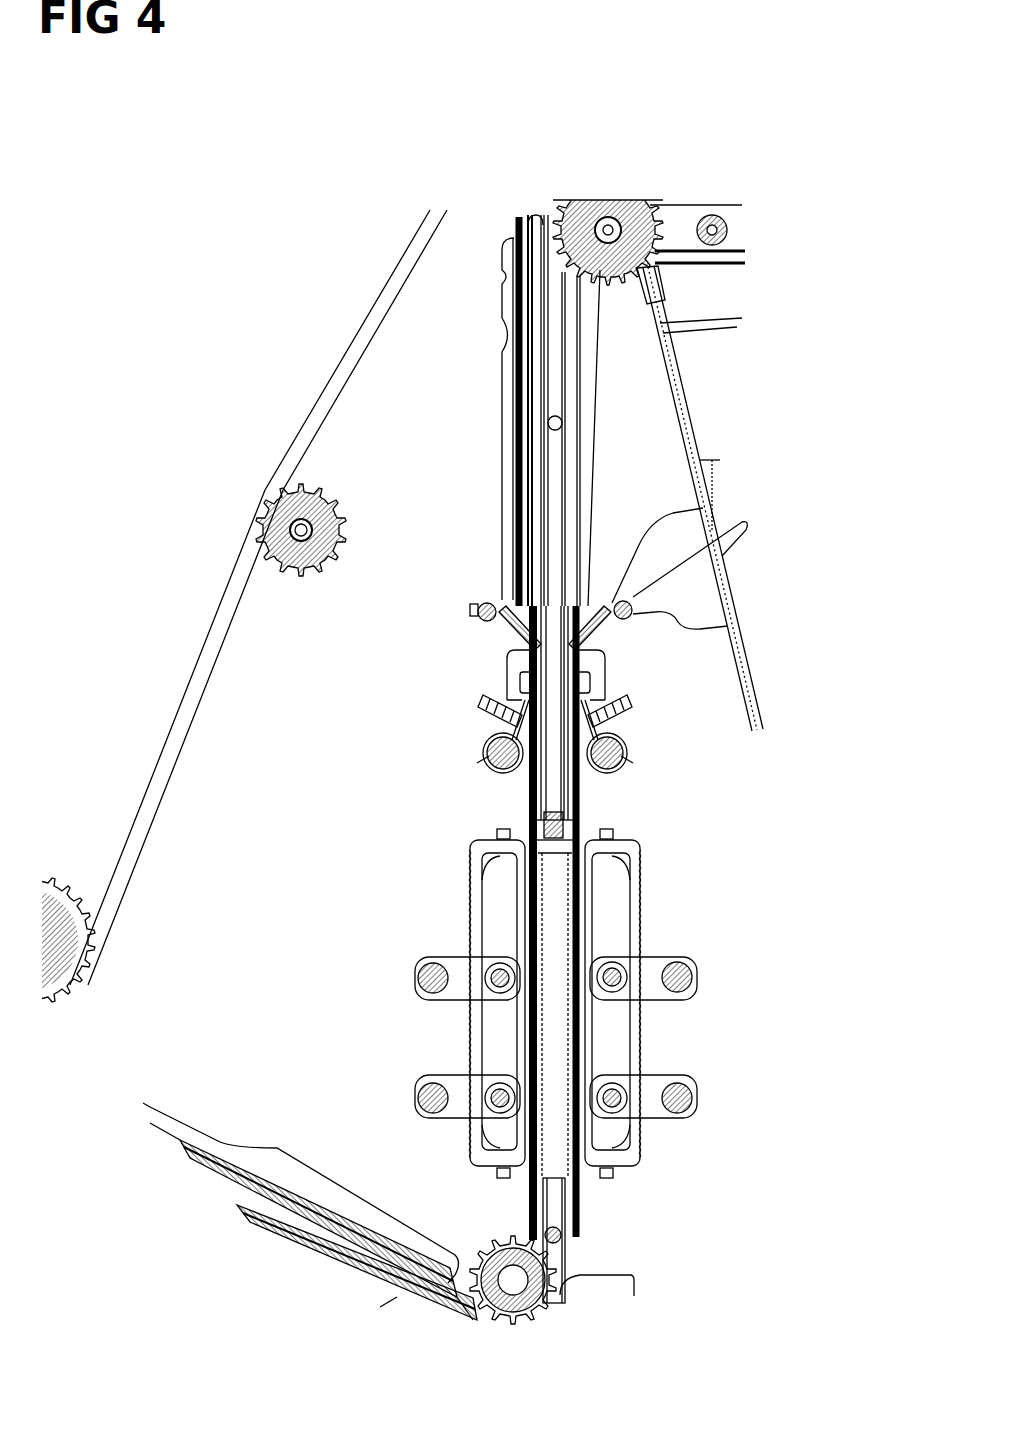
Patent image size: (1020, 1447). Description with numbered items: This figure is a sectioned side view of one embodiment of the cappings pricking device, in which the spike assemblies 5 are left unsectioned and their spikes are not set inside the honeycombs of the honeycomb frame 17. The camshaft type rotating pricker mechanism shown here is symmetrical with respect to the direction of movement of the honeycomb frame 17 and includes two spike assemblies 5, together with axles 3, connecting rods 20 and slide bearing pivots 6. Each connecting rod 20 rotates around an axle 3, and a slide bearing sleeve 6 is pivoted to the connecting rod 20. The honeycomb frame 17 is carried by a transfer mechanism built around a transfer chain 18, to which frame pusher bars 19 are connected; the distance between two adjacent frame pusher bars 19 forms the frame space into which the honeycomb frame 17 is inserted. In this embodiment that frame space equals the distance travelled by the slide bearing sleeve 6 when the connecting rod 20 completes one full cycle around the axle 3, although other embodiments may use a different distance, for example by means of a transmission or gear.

The axle 3 is at (497, 1098).
The spike assembly 5 is at (497, 893).
The slide bearing pivot 6 is at (433, 978).
The honeycomb frame 17 is at (552, 912).
The transfer chain 18 is at (553, 1198).
The frame pusher bar 19 is at (583, 841).
The connecting rod 20 is at (472, 1087).